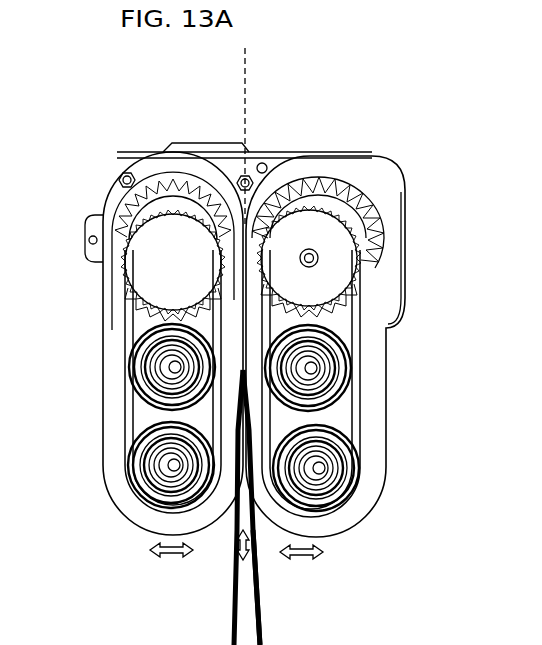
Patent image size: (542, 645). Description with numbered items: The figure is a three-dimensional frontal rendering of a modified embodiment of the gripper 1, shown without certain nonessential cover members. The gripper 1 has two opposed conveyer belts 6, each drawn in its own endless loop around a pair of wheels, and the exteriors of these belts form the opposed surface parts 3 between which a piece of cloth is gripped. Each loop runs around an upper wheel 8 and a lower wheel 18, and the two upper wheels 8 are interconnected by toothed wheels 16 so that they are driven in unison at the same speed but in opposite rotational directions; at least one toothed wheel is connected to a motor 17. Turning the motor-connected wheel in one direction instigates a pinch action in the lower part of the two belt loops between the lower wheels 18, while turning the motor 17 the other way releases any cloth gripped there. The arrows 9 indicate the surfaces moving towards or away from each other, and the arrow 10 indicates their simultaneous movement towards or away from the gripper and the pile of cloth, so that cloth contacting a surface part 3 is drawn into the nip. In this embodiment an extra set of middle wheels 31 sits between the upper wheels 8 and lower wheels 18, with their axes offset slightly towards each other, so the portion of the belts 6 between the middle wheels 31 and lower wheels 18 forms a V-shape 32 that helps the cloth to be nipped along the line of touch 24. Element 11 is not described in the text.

The gripper 1 is at (428, 186).
The surface parts 3 is at (263, 523).
The conveyer belts 6 is at (105, 373).
The upper wheels 8 is at (147, 257).
The arrows 9 is at (152, 551).
The arrow 10 is at (238, 553).
The mounting plate 11 is at (290, 157).
The toothed wheels 16 is at (143, 173).
The motor 17 is at (187, 142).
The lower wheels 18 is at (140, 462).
The line of touch 24 is at (245, 115).
The middle wheels 31 is at (127, 393).
The V-shape 32 is at (260, 583).